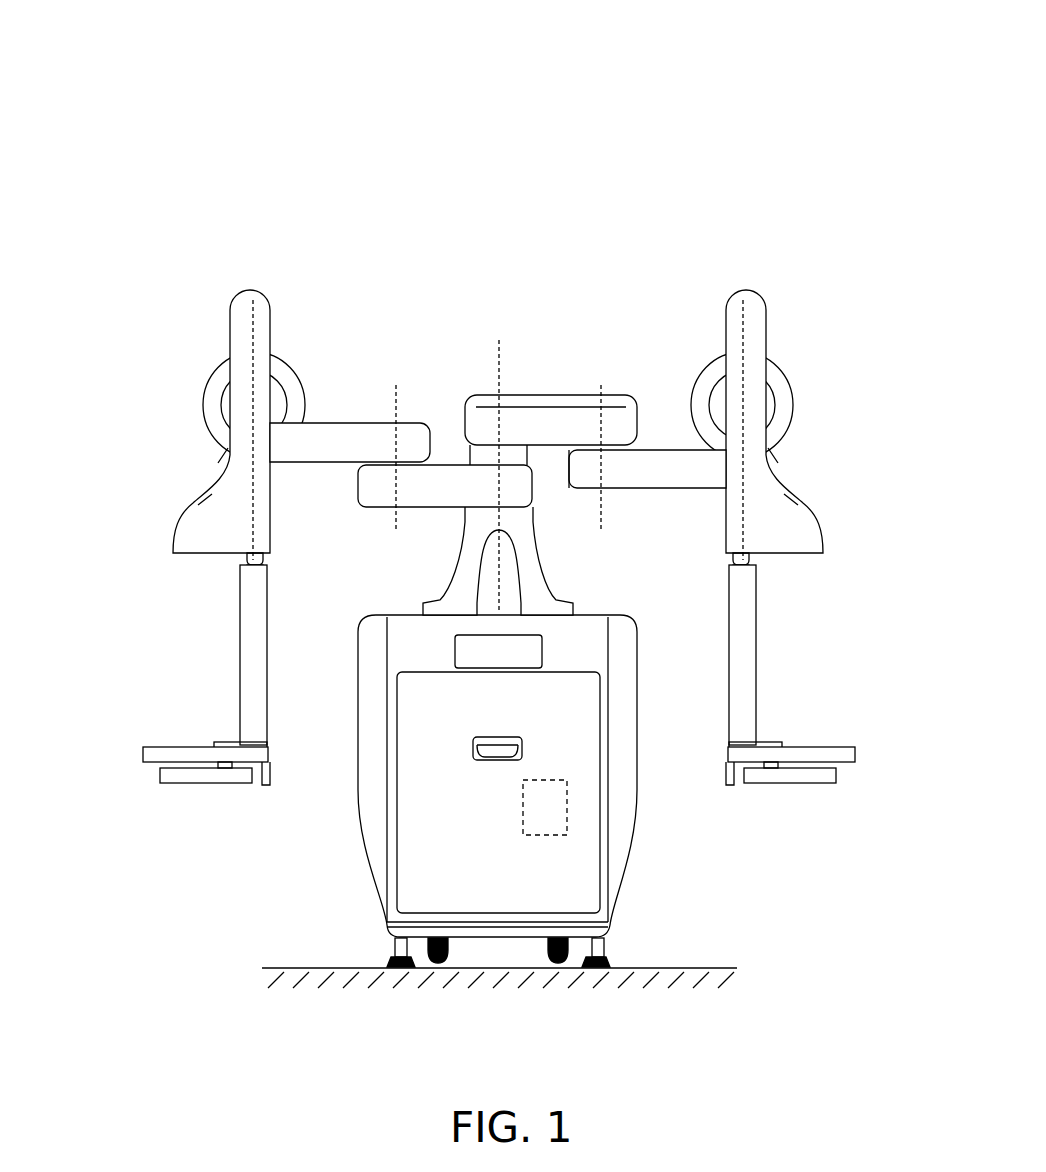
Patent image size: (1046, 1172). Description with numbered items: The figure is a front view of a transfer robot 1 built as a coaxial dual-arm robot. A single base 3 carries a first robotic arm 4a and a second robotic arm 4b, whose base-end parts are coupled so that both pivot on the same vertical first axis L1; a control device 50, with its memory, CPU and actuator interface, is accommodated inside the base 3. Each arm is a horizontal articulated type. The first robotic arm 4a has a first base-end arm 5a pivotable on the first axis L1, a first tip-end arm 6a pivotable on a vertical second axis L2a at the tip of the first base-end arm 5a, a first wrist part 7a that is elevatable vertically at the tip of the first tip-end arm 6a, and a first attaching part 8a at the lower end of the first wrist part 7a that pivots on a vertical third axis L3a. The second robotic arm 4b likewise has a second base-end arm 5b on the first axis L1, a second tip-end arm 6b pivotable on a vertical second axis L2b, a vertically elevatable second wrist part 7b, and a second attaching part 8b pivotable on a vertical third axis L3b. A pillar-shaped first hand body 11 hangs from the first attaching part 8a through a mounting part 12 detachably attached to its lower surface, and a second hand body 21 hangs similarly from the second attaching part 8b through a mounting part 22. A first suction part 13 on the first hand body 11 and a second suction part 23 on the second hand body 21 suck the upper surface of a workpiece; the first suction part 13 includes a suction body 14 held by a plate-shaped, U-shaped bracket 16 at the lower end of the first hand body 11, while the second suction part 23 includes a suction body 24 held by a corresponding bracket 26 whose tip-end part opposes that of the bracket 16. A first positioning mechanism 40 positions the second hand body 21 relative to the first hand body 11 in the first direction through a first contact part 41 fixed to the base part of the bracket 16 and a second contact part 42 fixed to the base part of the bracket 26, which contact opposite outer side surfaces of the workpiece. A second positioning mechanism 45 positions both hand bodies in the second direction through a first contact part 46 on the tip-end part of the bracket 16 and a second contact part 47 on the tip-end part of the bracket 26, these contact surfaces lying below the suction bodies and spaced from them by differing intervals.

The transfer robot 1 is at (592, 123).
The base 3 is at (640, 722).
The first robotic arm 4a is at (358, 253).
The second robotic arm 4b is at (760, 187).
The first base-end arm 5a is at (453, 463).
The second base-end arm 5b is at (546, 395).
The first tip-end arm 6a is at (335, 422).
The second tip-end arm 6b is at (662, 450).
The first wrist part 7a is at (276, 305).
The second wrist part 7b is at (722, 303).
The first attaching part 8a is at (268, 558).
The second attaching part 8b is at (728, 558).
The first hand body 11 is at (252, 640).
The mounting part 12 is at (247, 562).
The first suction part 13 is at (133, 735).
The suction body 14 is at (143, 752).
The bracket 16 is at (227, 742).
The second hand body 21 is at (744, 640).
The mounting part 22 is at (749, 562).
The second suction part 23 is at (863, 735).
The suction body 24 is at (855, 752).
The bracket 26 is at (773, 742).
The first positioning mechanism 40 is at (501, 845).
The first contact part 41 is at (265, 787).
The second contact part 42 is at (731, 787).
The second positioning mechanism 45 is at (500, 848).
The first contact part 46 is at (203, 786).
The second contact part 47 is at (793, 786).
The control device 50 is at (567, 810).
The first axis L1 is at (500, 459).
The second axis L2a is at (400, 446).
The second axis L2b is at (605, 446).
The third axis L3a is at (258, 335).
The third axis L3b is at (748, 335).